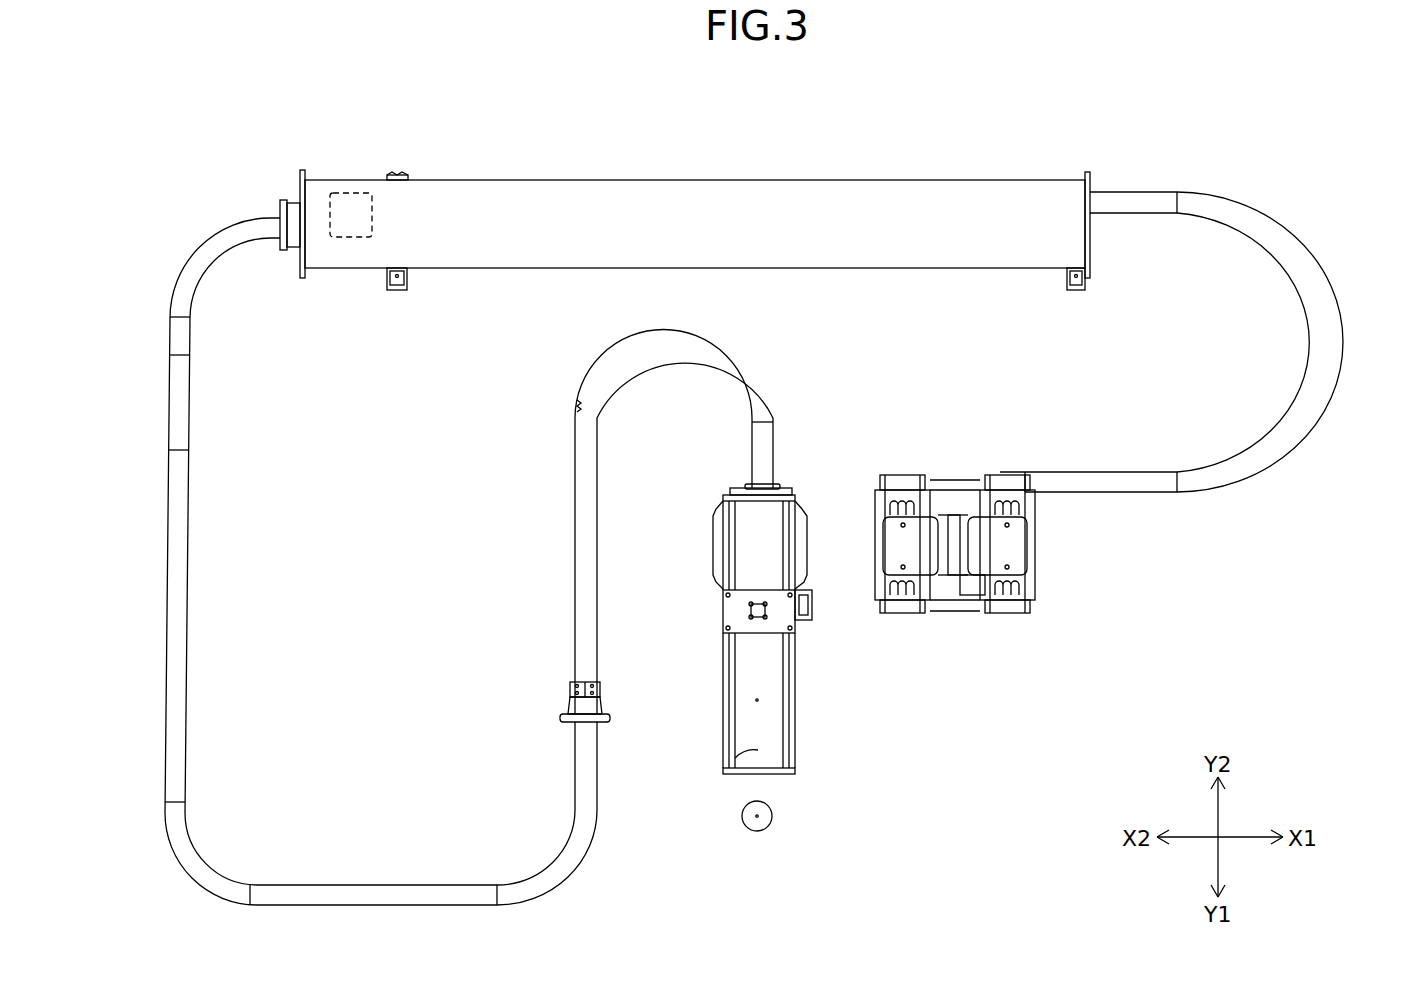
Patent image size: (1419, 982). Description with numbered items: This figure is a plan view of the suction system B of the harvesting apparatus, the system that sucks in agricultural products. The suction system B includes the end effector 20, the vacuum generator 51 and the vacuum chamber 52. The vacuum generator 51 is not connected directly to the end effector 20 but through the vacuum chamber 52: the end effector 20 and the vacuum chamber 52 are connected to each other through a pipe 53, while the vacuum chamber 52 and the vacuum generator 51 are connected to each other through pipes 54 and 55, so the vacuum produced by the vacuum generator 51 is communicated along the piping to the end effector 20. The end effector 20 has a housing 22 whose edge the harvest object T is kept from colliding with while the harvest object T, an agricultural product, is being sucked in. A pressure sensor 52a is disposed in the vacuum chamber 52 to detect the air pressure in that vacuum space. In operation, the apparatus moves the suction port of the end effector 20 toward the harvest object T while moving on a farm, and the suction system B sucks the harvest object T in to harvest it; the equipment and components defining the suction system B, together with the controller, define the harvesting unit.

The end effector 20 is at (808, 644).
The housing 22 is at (780, 720).
The vacuum generator 51 is at (1005, 605).
The vacuum chamber 52 is at (762, 183).
The pressure sensor 52a is at (352, 193).
The pipe 53 is at (1336, 298).
The pipe 54 is at (170, 632).
The pipe 55 is at (578, 633).
The suction system B is at (985, 147).
The harvest object T is at (760, 832).